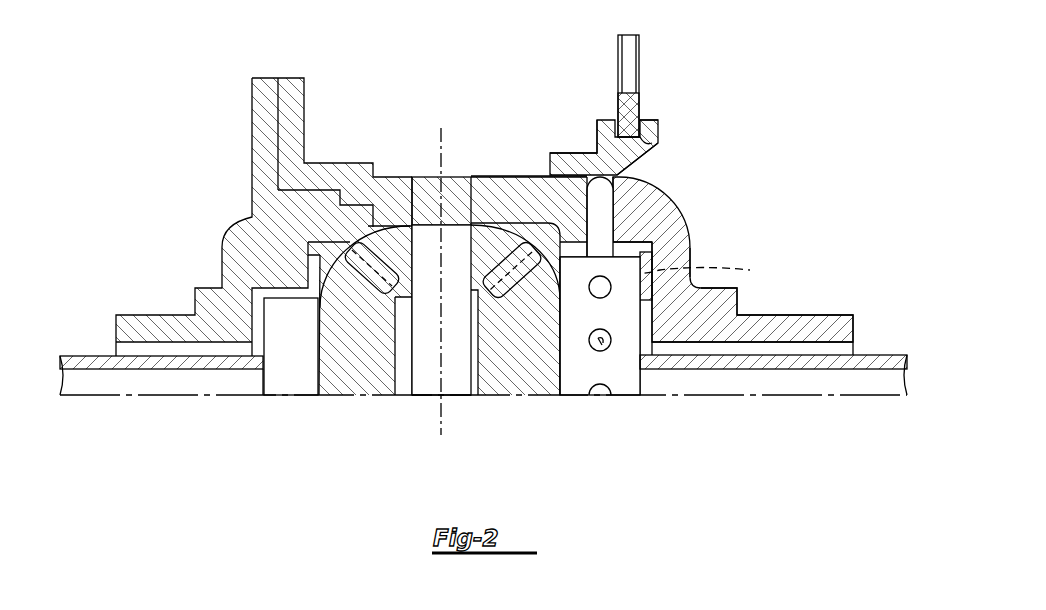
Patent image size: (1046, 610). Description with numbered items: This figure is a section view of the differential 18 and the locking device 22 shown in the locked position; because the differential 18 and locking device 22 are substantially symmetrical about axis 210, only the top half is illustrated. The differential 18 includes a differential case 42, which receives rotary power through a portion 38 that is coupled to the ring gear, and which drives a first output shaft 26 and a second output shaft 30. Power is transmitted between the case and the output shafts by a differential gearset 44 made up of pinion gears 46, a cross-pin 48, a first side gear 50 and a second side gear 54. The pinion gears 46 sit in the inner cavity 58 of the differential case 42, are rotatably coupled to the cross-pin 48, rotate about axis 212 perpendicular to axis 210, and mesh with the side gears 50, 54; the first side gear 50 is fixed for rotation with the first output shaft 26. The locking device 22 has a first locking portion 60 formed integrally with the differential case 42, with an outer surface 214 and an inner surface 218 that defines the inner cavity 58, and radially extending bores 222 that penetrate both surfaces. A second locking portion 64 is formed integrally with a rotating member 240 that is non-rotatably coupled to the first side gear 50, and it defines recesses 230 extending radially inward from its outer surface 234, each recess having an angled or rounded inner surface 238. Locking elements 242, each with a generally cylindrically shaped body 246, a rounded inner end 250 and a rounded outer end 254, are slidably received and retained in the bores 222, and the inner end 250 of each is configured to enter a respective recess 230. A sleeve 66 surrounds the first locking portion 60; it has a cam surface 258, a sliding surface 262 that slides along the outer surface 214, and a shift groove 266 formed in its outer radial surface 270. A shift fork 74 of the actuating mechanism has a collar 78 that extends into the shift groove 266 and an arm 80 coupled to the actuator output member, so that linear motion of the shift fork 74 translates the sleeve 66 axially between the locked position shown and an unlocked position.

The differential 18 is at (248, 97).
The portion of the differential 38 is at (293, 83).
The differential case 42 is at (336, 163).
The pinion gears 46 is at (397, 227).
The outer surface 214 is at (482, 175).
The sliding surface 262 is at (563, 178).
The first locking portion 60 is at (570, 197).
The locking device 22 is at (594, 116).
The sleeve 66 is at (597, 140).
The collar 78 is at (618, 113).
The arm 80 is at (640, 43).
The shift fork 74 is at (640, 100).
The outer radial surface 270 is at (660, 117).
The shift groove 266 is at (662, 146).
The cam surface 258 is at (658, 152).
The outer end 254 is at (616, 180).
The bores 222 is at (640, 195).
The cylindrically shaped body 246 is at (600, 218).
The locking elements 242 is at (643, 225).
The inner surface 218 is at (691, 240).
The second locking portion 64 is at (653, 262).
The inner end 250 is at (693, 271).
The inner cavity 58 is at (643, 318).
The first output shaft 26 is at (865, 362).
The recesses 230 is at (590, 332).
The inner surface 238 is at (600, 340).
The outer surface 234 is at (568, 378).
The rotating member 240 is at (627, 387).
The second side gear 54 is at (361, 383).
The cross-pin 48 is at (456, 399).
The differential gearset 44 is at (478, 402).
The axis 212 is at (440, 423).
The second output shaft 30 is at (142, 383).
The first side gear 50 is at (507, 398).
The axis 210 is at (755, 396).